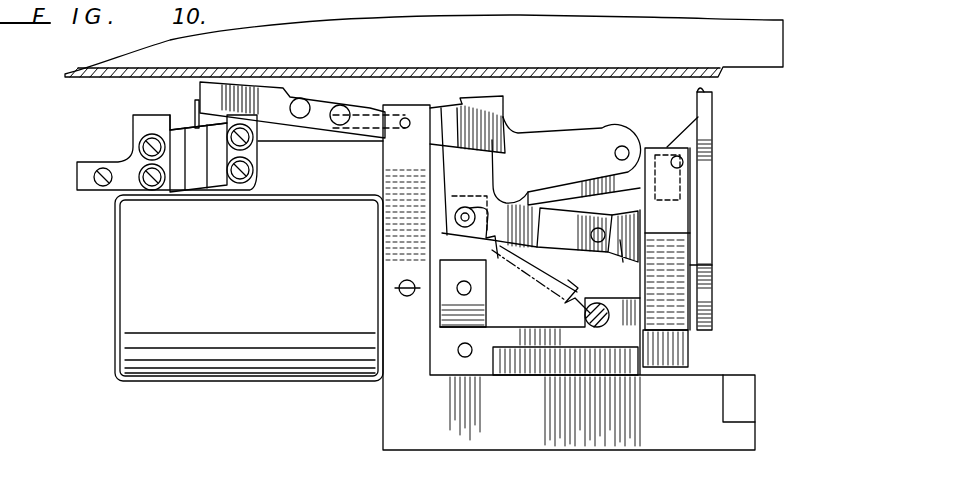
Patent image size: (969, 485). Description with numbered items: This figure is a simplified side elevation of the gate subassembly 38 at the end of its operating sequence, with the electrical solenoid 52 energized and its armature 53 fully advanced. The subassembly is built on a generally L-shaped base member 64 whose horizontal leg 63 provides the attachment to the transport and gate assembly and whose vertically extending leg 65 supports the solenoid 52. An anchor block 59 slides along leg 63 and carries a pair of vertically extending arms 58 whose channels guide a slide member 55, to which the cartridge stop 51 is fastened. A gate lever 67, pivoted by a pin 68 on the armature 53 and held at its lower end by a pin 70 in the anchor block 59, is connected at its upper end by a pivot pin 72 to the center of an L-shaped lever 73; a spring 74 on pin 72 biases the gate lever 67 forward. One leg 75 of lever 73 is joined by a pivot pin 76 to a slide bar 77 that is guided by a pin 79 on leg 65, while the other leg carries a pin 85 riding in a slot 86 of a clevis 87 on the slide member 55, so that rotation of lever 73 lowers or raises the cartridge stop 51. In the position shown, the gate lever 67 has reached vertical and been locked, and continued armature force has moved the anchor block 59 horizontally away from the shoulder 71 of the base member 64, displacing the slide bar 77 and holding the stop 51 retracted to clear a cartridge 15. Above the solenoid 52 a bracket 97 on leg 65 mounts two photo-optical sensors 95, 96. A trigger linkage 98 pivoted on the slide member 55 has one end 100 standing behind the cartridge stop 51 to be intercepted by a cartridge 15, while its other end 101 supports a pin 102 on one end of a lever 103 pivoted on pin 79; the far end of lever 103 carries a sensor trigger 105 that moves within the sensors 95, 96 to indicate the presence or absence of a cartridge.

The cartridge 15 is at (778, 35).
The gate subassembly 38 is at (756, 174).
The cartridge stop 51 is at (707, 146).
The electrical solenoid 52 is at (258, 290).
The armature 53 is at (433, 270).
The slide member 55 is at (692, 265).
The arms 58 is at (680, 200).
The anchor block 59 is at (540, 365).
The horizontal leg 63 is at (678, 388).
The base member 64 is at (397, 413).
The vertically extending leg 65 is at (397, 213).
The gate lever 67 is at (447, 245).
The pin 68 is at (460, 291).
The pin 70 is at (457, 350).
The shoulder 71 is at (742, 393).
The pivot pin 72 is at (455, 210).
The L-shaped lever 73 is at (508, 158).
The spring 74 is at (553, 300).
The leg 75 is at (460, 163).
The pivot pin 76 is at (482, 110).
The slide bar 77 is at (285, 135).
The pin 79 is at (405, 118).
The pin 85 is at (593, 231).
The slot 86 is at (622, 248).
The clevis 87 is at (690, 233).
The photo-optical sensor 95 is at (162, 128).
The photo-optical sensor 96 is at (180, 185).
The bracket 97 is at (268, 183).
The trigger linkage 98 is at (584, 174).
The end of trigger linkage 100 is at (695, 95).
The other end of trigger linkage 101 is at (540, 182).
The pin 102 is at (622, 143).
The lever 103 is at (440, 113).
The sensor trigger 105 is at (245, 100).